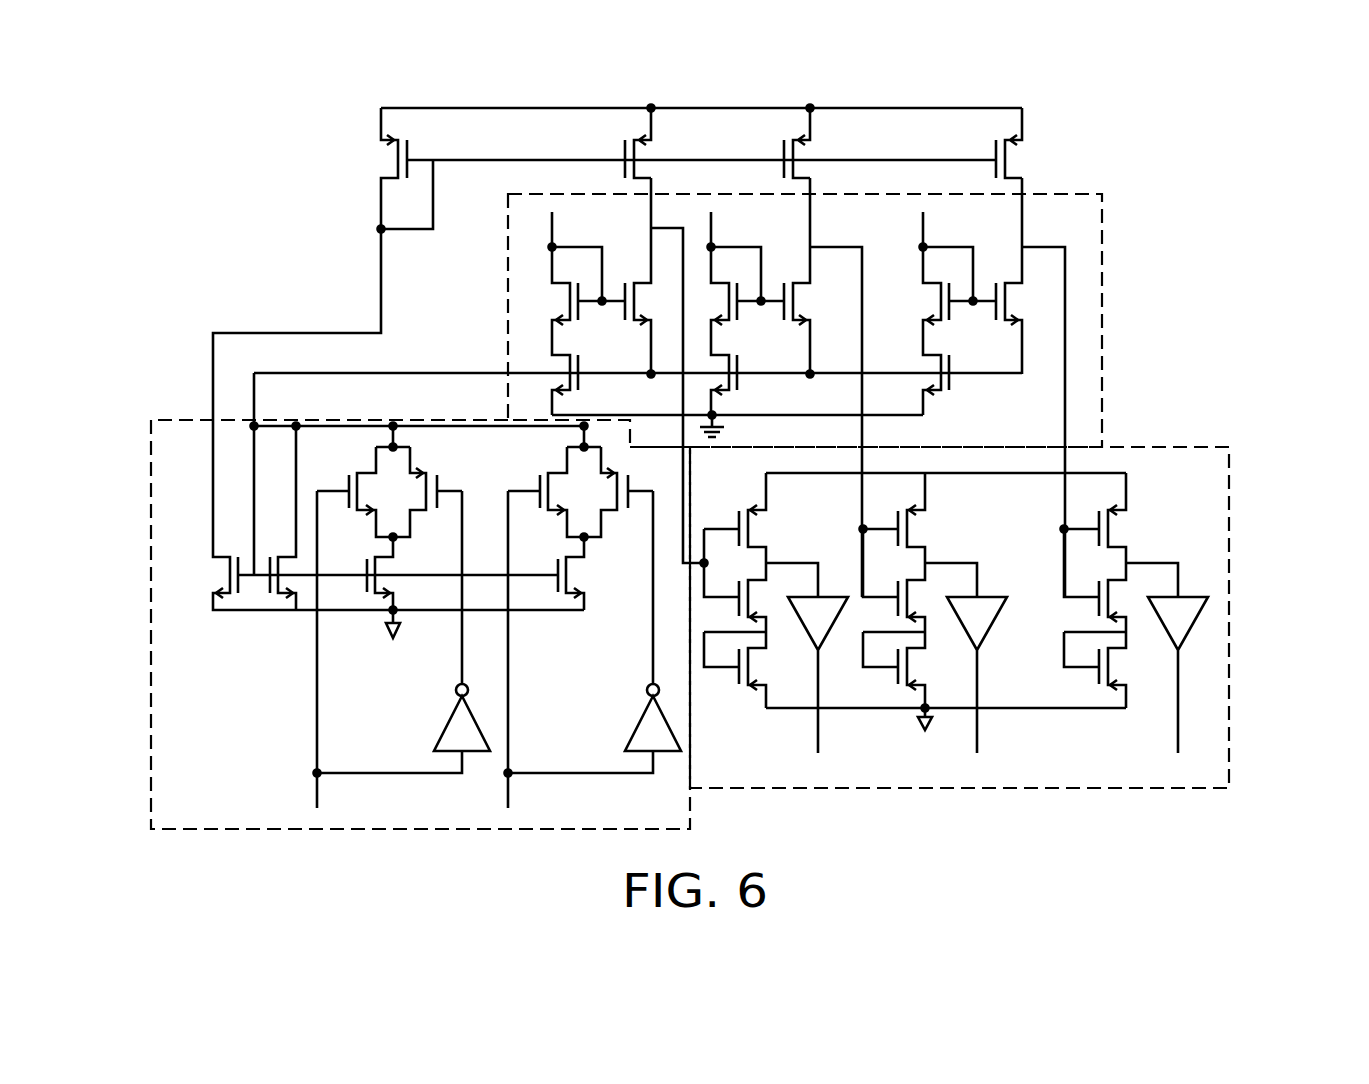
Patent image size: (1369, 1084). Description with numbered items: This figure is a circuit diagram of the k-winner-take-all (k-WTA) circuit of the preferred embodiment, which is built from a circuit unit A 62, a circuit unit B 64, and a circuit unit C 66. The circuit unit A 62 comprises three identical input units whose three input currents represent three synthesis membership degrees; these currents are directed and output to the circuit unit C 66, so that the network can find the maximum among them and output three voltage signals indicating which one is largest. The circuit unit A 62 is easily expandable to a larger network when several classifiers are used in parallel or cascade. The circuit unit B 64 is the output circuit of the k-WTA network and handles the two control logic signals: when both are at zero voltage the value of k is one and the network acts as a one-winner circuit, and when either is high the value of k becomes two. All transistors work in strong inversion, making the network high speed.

The circuit unit A 62 is at (1102, 306).
The circuit unit B 64 is at (150, 628).
The circuit unit C 66 is at (1229, 537).